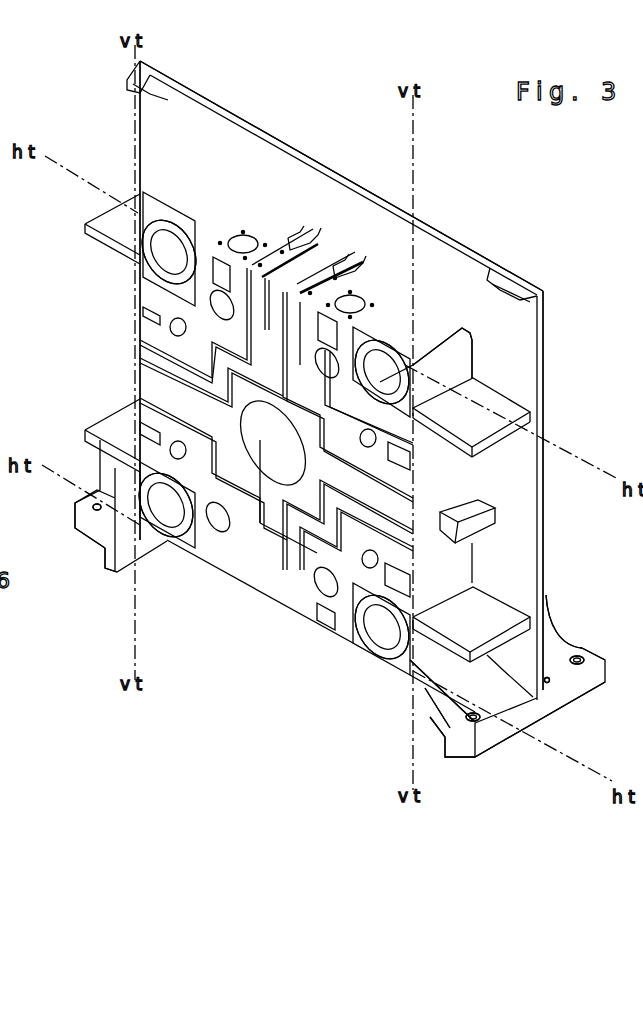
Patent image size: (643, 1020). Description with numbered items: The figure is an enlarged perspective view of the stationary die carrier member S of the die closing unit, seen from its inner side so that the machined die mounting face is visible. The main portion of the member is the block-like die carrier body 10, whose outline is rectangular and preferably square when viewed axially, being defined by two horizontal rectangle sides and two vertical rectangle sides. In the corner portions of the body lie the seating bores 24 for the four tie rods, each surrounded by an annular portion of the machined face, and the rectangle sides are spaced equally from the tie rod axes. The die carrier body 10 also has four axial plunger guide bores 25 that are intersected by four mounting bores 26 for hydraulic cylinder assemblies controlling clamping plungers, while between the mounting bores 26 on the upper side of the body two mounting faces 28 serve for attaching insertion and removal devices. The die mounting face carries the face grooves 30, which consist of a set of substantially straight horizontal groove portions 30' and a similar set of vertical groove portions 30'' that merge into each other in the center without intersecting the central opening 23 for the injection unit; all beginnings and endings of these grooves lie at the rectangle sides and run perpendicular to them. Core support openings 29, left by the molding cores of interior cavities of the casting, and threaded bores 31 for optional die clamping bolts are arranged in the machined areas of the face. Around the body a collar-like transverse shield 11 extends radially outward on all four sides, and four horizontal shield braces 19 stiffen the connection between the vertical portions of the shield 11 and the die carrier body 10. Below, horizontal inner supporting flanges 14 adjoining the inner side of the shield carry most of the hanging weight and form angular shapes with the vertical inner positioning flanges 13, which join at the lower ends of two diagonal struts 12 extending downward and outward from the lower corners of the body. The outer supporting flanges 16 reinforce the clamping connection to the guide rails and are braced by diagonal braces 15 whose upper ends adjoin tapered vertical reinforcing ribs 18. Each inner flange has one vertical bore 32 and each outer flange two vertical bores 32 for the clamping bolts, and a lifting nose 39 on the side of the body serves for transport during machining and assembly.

The stationary die carrier member S is at (246, 112).
The die carrier body 10 is at (445, 335).
The transverse shield 11 is at (153, 137).
The diagonal struts 12 is at (427, 703).
The inner positioning flanges 13 is at (110, 557).
The inner supporting flanges 14 is at (87, 522).
The diagonal braces 15 is at (555, 630).
The outer supporting flanges 16 is at (580, 688).
The reinforcing ribs 18 is at (545, 607).
The shield braces 19 is at (110, 223).
The central opening 23 is at (288, 457).
The seating bores 24 is at (166, 255).
The plunger guide bores 25 is at (327, 363).
The mounting bores 26 is at (245, 243).
The mounting faces 28 is at (252, 262).
The core support openings 29 is at (170, 327).
The face grooves 30 is at (154, 426).
The horizontal groove portions 30' is at (435, 402).
The vertical groove portions 30'' is at (312, 565).
The threaded bores 31 is at (183, 312).
The vertical bores 32 is at (585, 660).
The lifting nose 39 is at (468, 522).